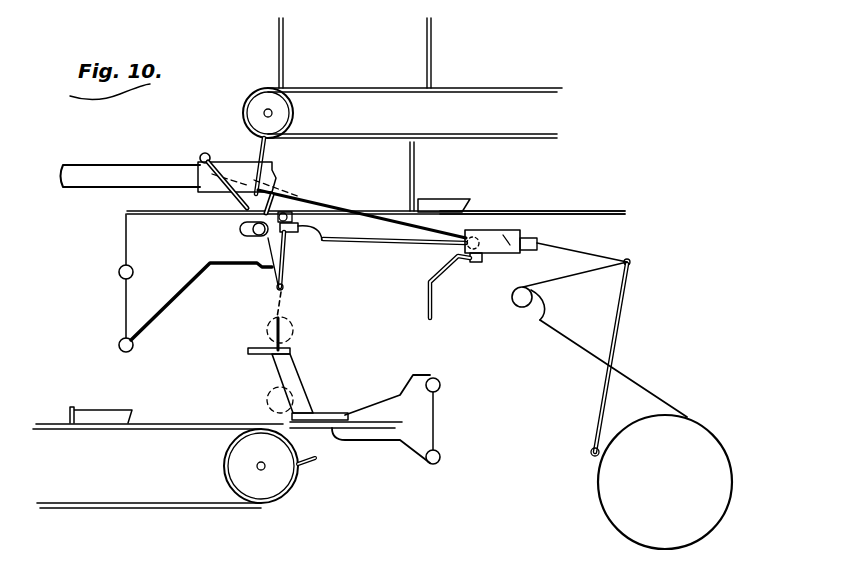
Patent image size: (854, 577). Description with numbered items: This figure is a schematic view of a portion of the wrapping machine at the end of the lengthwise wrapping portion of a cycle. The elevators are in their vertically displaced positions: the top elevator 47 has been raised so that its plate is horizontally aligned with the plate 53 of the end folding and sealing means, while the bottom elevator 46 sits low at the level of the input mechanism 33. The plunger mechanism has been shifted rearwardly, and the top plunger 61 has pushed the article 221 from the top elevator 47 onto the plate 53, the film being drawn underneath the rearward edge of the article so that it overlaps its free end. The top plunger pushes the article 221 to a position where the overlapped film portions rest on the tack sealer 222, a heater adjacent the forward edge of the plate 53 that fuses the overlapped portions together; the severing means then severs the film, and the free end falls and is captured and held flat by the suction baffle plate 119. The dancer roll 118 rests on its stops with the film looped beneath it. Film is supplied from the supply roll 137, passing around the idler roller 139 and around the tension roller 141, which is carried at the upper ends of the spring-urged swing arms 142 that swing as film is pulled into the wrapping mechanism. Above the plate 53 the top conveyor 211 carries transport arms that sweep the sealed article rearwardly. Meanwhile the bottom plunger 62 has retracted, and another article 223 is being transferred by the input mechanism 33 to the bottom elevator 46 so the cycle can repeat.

The top conveyor 211 is at (236, 109).
The article 221 is at (292, 204).
The plate 53 is at (557, 212).
The top elevator 47 is at (142, 238).
The top plunger 61 is at (235, 206).
The tack sealer 222 is at (302, 240).
The dancer roll 118 is at (283, 287).
The bottom plunger 62 is at (432, 300).
The tension roller 141 is at (629, 261).
The swing arms 142 is at (612, 326).
The idler roller 139 is at (537, 323).
The suction baffle plate 119 is at (247, 357).
The another article 223 is at (322, 412).
The bottom elevator 46 is at (433, 420).
The input mechanism 33 is at (300, 500).
The supply roll 137 is at (620, 505).